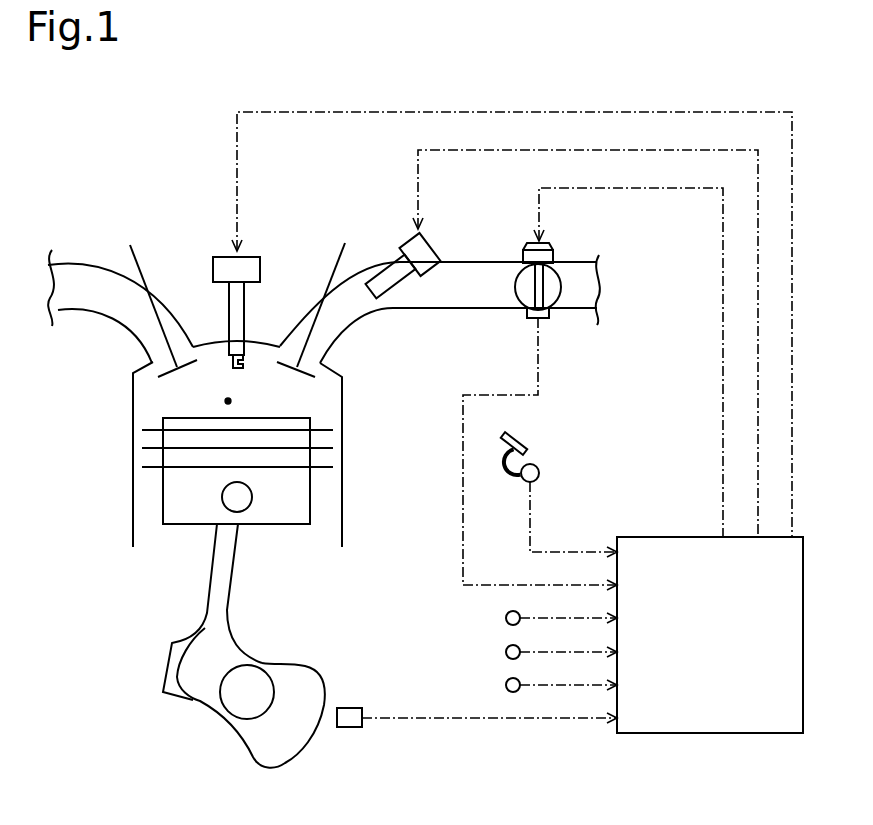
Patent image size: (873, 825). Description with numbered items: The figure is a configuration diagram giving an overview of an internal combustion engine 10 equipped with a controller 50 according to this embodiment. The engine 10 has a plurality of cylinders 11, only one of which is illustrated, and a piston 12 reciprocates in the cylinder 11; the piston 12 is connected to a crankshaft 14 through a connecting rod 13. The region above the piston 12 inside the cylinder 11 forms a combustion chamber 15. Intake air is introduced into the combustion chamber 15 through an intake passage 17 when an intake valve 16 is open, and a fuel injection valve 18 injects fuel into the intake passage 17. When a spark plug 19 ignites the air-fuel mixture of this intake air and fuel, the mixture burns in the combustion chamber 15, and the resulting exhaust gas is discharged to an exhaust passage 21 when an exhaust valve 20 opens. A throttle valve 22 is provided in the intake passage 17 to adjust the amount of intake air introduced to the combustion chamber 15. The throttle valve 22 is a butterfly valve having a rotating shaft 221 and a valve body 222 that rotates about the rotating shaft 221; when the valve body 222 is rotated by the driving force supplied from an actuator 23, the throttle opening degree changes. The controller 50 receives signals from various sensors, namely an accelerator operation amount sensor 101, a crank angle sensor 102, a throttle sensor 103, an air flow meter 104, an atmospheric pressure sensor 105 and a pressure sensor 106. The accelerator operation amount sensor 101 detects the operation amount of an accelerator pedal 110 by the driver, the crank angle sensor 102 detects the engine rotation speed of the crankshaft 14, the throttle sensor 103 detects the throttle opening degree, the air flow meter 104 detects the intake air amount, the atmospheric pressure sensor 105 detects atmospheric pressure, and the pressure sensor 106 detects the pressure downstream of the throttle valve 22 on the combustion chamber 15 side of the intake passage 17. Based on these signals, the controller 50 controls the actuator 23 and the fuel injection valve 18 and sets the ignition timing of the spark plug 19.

The internal combustion engine 10 is at (122, 607).
The cylinder 11 is at (133, 485).
The piston 12 is at (283, 524).
The connecting rod 13 is at (207, 578).
The crankshaft 14 is at (283, 665).
The combustion chamber 15 is at (228, 404).
The intake valve 16 is at (300, 343).
The intake passage 17 is at (453, 309).
The fuel injection valve 18 is at (434, 254).
The spark plug 19 is at (228, 308).
The exhaust valve 20 is at (160, 338).
The exhaust passage 21 is at (67, 264).
The throttle valve 22 is at (663, 255).
The rotating shaft 221 is at (543, 280).
The valve body 222 is at (548, 292).
The actuator 23 is at (520, 250).
The controller 50 is at (668, 537).
The accelerator operation amount sensor 101 is at (540, 472).
The crank angle sensor 102 is at (350, 708).
The throttle sensor 103 is at (541, 318).
The air flow meter 104 is at (506, 618).
The atmospheric pressure sensor 105 is at (506, 652).
The pressure sensor 106 is at (506, 685).
The accelerator pedal 110 is at (505, 430).